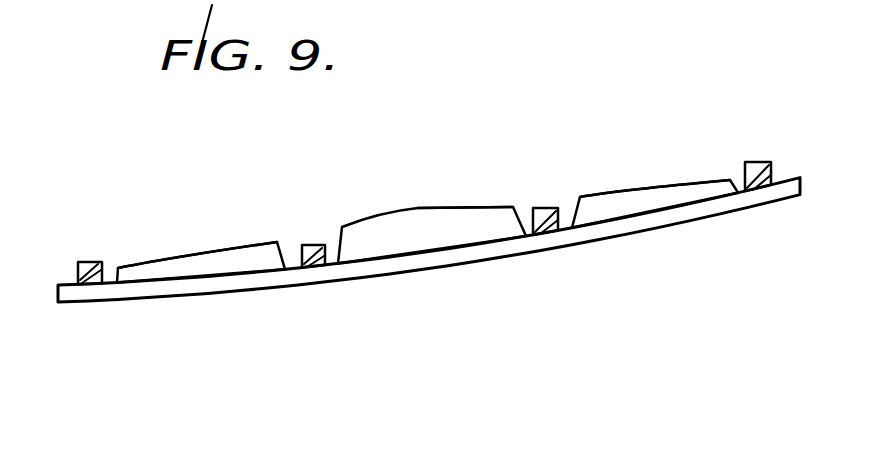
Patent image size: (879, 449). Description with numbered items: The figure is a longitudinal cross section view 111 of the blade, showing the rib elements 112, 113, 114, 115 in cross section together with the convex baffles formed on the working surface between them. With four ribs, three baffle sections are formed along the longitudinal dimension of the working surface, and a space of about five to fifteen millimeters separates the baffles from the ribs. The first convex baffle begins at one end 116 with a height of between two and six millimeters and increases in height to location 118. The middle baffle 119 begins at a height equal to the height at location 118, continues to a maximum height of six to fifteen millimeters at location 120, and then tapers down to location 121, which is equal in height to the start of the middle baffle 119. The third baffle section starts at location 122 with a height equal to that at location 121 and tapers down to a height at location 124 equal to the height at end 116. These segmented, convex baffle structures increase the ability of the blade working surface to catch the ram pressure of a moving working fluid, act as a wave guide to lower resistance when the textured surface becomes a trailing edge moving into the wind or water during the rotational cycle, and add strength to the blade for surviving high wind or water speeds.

The longitudinal cross section view 111 is at (468, 292).
The rib element 112 is at (84, 262).
The rib element 113 is at (312, 245).
The rib element 114 is at (545, 208).
The rib element 115 is at (750, 162).
The baffle end 116 is at (125, 260).
The baffle location 118 is at (277, 240).
The middle baffle 119 is at (390, 243).
The maximum height location 120 is at (418, 207).
The baffle location 121 is at (511, 207).
The third baffle start 122 is at (581, 197).
The baffle end location 124 is at (728, 182).